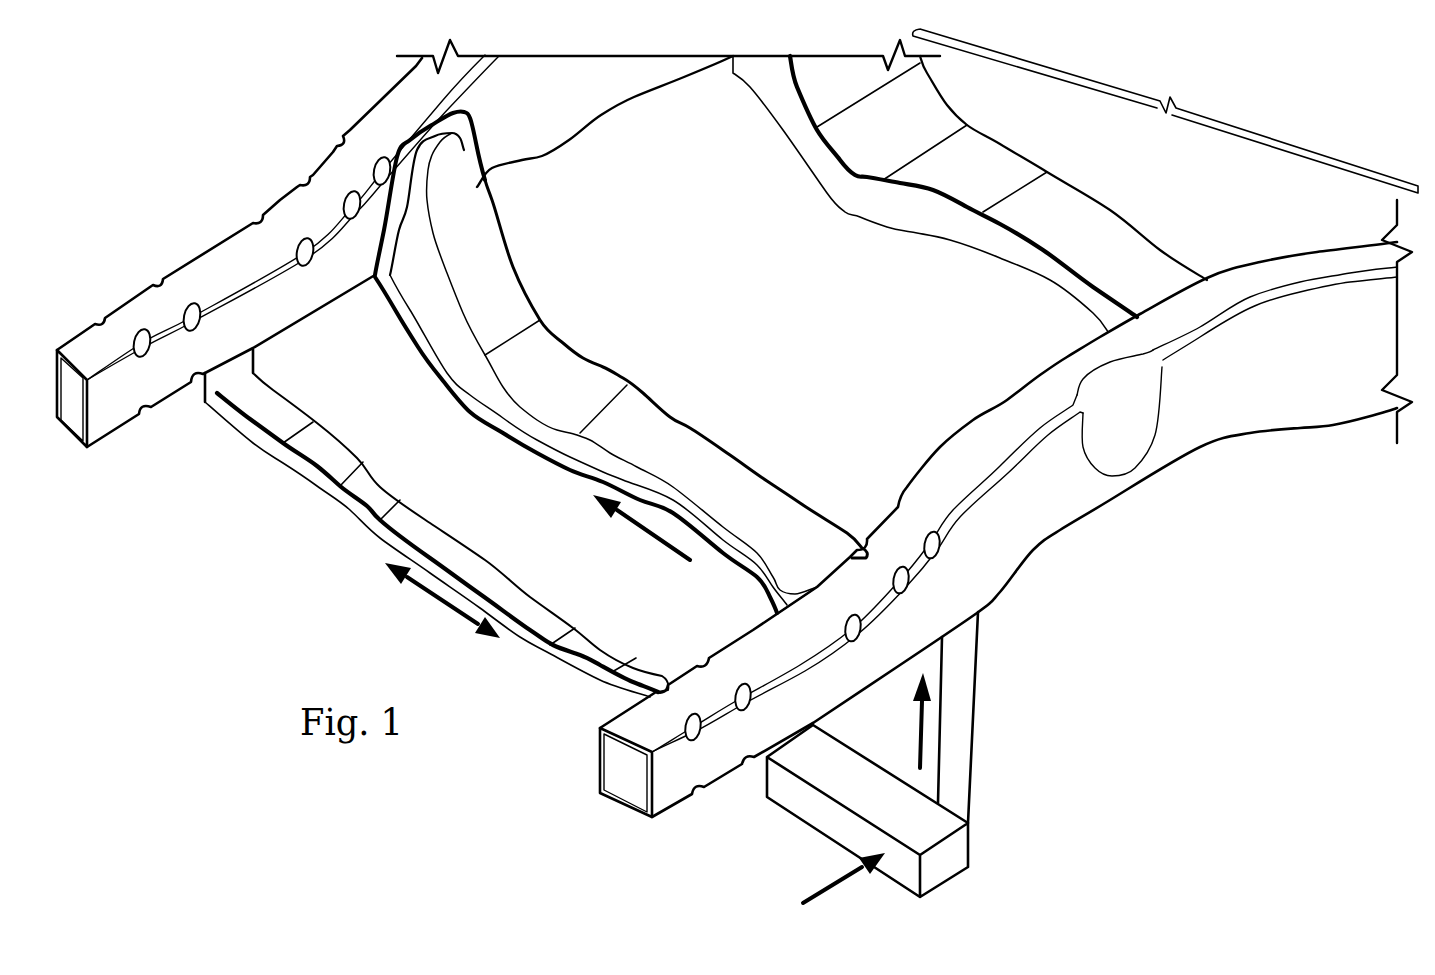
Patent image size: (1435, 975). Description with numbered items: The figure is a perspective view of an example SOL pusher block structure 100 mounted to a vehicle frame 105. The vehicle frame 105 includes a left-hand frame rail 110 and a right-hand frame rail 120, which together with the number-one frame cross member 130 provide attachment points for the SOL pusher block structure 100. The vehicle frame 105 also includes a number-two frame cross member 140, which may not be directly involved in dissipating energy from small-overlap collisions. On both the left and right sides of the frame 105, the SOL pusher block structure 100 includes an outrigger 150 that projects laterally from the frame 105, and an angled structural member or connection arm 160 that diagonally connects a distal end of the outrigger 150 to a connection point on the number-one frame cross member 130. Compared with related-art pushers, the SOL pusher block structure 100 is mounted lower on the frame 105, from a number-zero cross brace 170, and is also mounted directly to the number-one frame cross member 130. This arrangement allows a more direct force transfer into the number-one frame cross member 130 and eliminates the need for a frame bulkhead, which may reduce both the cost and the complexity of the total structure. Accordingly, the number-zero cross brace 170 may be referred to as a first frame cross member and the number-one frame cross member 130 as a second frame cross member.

The SOL pusher block structure 100 is at (1145, 660).
The vehicle frame 105 is at (1165, 111).
The left-hand frame rail 110 is at (1003, 418).
The right-hand frame rail 120 is at (205, 272).
The No. 1 frame cross member 130 is at (712, 457).
The No. 2 frame cross member 140 is at (1113, 233).
The outrigger 150 is at (825, 820).
The connection arm 160 is at (980, 717).
The No. 0 cross brace 170 is at (485, 575).